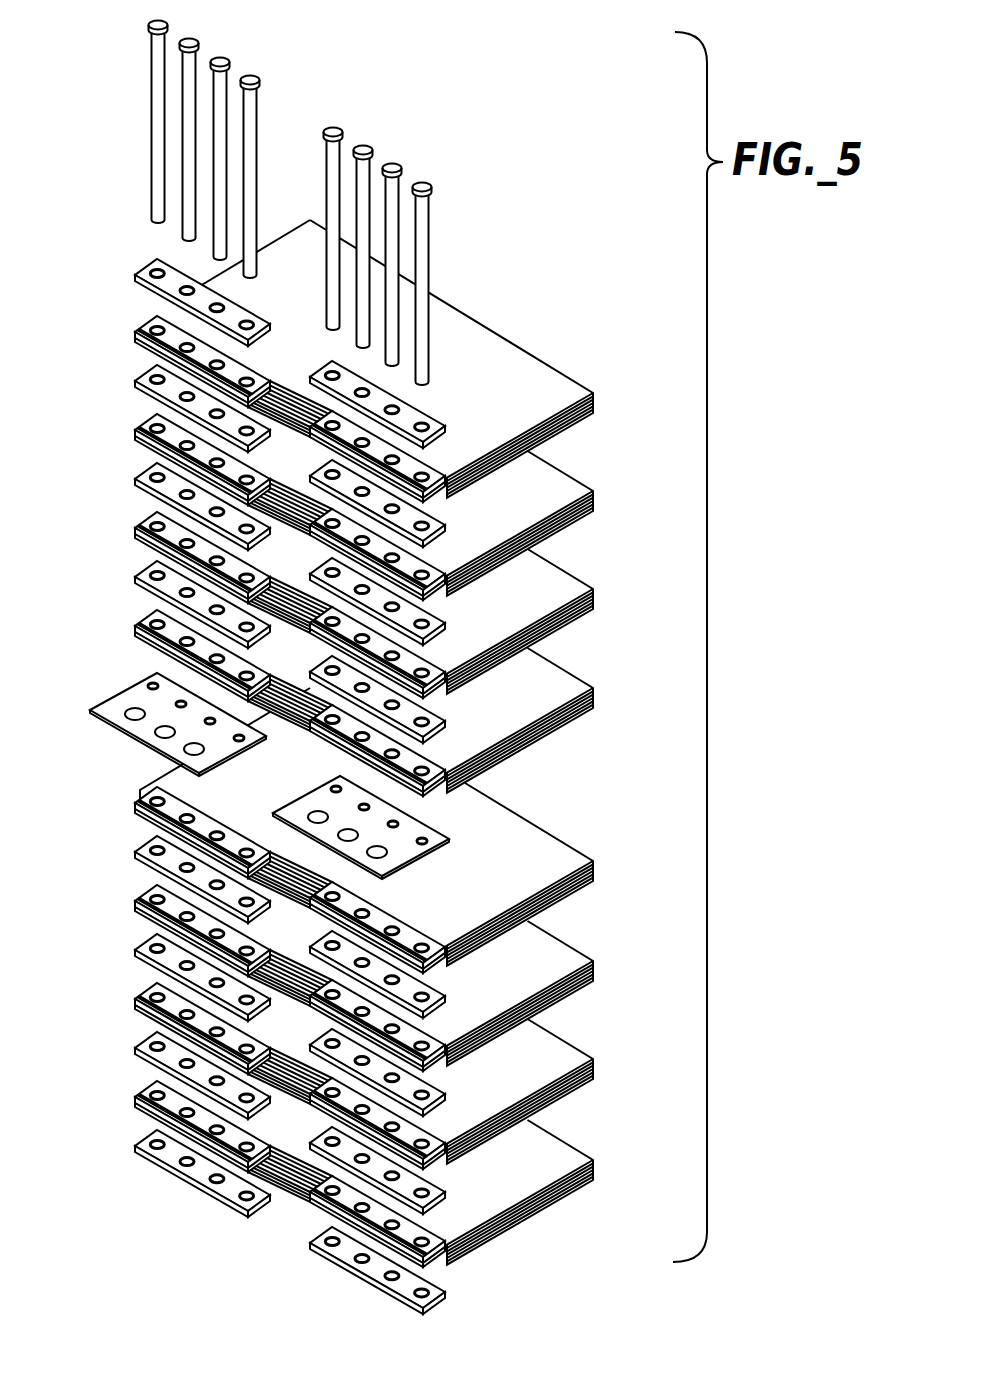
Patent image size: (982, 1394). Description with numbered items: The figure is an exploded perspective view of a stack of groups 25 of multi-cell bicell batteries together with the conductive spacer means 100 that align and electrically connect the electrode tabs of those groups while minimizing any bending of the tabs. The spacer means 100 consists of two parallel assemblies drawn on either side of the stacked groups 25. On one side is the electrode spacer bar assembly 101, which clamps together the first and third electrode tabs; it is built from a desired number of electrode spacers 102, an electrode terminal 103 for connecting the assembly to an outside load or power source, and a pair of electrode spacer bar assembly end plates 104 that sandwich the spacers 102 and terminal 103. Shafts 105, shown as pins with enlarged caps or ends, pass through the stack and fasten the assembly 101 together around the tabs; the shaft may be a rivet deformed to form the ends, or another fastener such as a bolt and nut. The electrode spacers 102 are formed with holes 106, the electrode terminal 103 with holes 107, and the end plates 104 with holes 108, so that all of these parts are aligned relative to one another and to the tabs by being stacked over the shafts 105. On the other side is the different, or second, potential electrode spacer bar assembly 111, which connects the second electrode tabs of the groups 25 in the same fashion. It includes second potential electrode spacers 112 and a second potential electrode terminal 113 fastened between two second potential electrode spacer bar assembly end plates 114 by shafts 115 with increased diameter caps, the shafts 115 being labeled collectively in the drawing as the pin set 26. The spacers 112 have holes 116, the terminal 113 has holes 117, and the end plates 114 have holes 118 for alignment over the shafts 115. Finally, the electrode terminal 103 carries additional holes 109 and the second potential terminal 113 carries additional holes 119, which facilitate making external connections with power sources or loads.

The group 25 is at (589, 440).
The terminal pin assembly 26 is at (420, 229).
The conductive spacer means 100 is at (338, 1306).
The electrode spacer bar assembly 101 is at (152, 150).
The electrode spacer 102 is at (148, 375).
The electrode terminal 103 is at (150, 706).
The electrode spacer bar assembly end plate 104 is at (150, 290).
The shaft 105 is at (240, 138).
The holes 106 is at (250, 791).
The holes 107 is at (181, 695).
The holes 108 is at (187, 286).
The additional holes 109 is at (158, 737).
The second potential electrode spacer bar assembly 111 is at (460, 373).
The second potential electrode spacer 112 is at (443, 534).
The second potential electrode terminal 113 is at (394, 841).
The second potential electrode spacer bar assembly end plate 114 is at (443, 437).
The shaft 115 is at (365, 252).
The holes 116 is at (362, 684).
The holes 117 is at (425, 843).
The holes 118 is at (420, 416).
The additional holes 119 is at (347, 843).